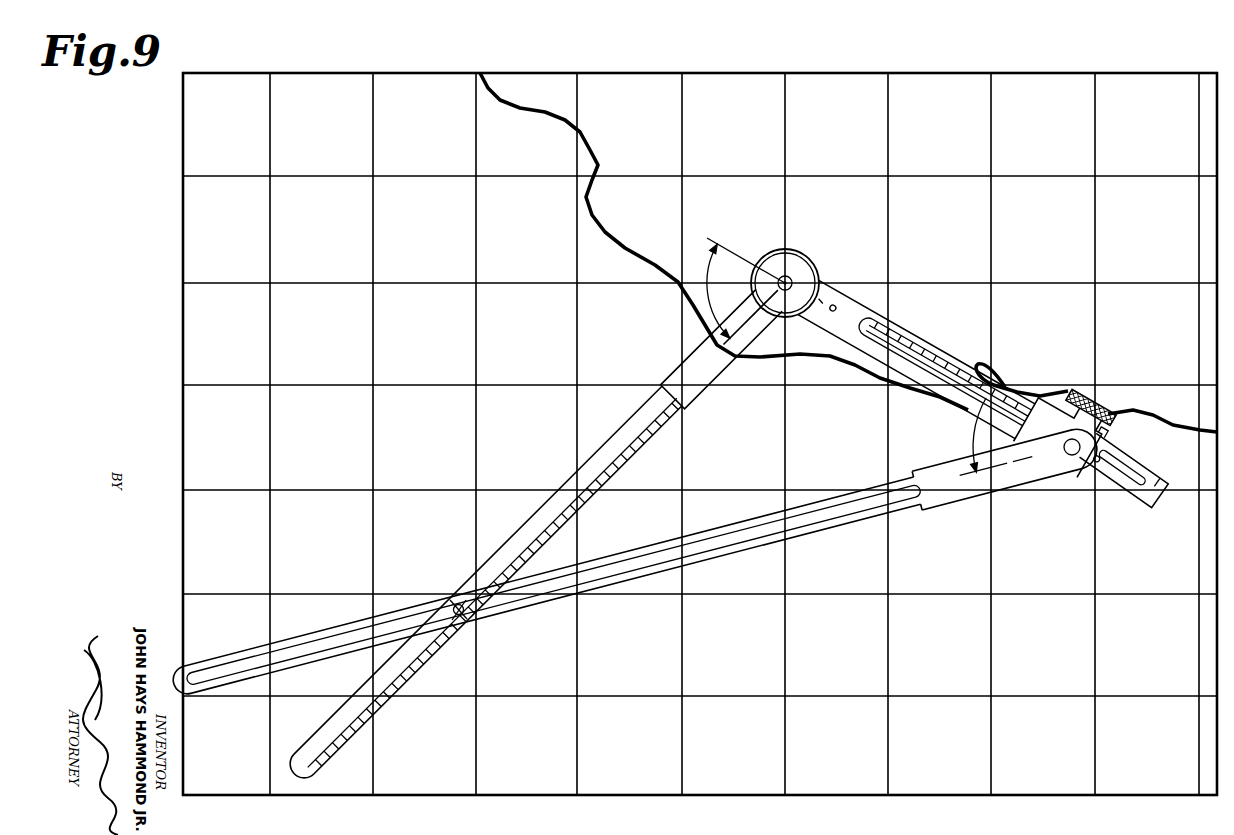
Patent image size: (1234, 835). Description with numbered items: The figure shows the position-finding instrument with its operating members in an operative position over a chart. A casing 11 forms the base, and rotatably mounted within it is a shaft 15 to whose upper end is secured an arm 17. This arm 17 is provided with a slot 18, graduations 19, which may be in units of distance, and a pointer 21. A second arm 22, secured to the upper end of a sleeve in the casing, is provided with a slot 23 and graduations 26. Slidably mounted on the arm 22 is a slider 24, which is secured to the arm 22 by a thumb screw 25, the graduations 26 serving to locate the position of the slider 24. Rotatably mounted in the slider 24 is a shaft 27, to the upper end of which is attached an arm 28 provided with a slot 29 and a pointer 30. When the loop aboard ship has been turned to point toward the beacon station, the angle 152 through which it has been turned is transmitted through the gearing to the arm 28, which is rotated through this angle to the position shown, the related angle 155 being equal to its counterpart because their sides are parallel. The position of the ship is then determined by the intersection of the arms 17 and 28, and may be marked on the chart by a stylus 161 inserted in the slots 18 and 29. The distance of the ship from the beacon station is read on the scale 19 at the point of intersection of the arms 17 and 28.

The casing 11 is at (862, 797).
The shaft 15 is at (785, 276).
The arm 17 is at (697, 392).
The slot 18 is at (650, 408).
The graduations 19 is at (420, 663).
The pointer 21 is at (812, 261).
The arm 22 is at (845, 320).
The slot 23 is at (920, 357).
The slider 24 is at (1113, 445).
The thumb screw 25 is at (1104, 398).
The graduations 26 is at (947, 363).
The shaft 27 is at (1073, 456).
The arm 28 is at (968, 487).
The slot 29 is at (835, 512).
The pointer 30 is at (1108, 434).
The angle 152 is at (974, 429).
The angle 155 is at (746, 288).
The stylus 161 is at (467, 615).